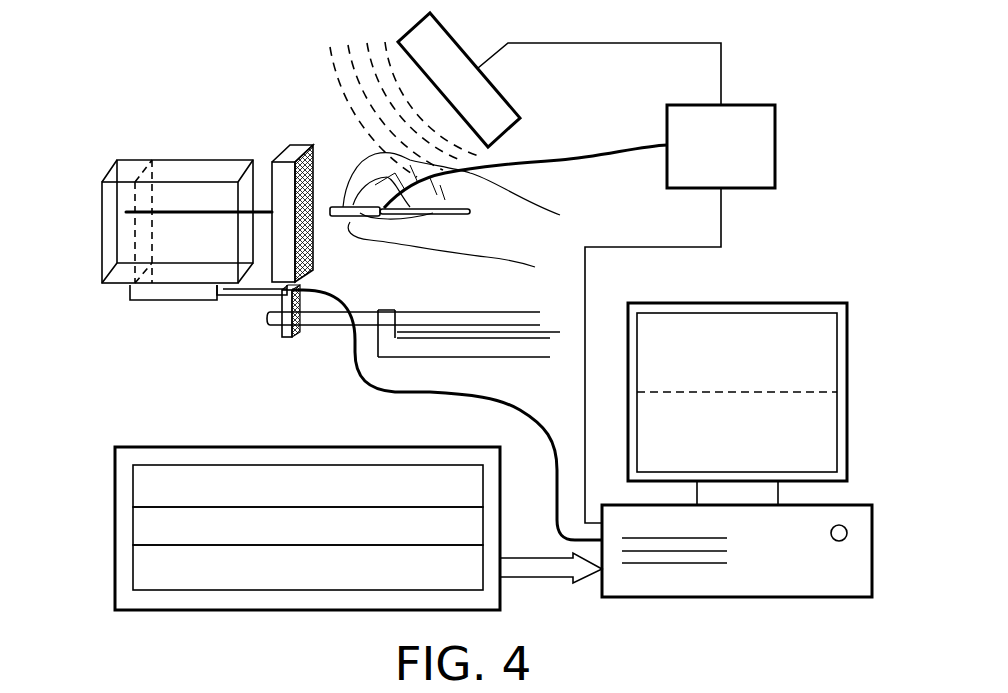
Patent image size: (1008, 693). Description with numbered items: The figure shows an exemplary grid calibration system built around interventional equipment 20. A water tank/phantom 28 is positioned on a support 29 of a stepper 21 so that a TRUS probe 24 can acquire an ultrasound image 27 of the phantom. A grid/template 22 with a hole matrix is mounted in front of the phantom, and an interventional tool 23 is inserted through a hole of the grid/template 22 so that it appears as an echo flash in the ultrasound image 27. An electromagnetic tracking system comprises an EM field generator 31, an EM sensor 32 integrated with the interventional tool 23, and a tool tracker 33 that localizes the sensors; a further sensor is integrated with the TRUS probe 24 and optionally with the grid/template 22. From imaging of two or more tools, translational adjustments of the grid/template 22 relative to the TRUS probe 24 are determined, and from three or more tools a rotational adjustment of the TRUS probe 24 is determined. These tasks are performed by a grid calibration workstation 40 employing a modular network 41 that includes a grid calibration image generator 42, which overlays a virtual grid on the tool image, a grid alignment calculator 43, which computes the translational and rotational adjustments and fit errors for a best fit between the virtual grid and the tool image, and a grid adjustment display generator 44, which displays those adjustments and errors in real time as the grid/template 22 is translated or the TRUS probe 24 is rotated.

The interventional equipment 20 is at (326, 388).
The stepper 21 is at (463, 348).
The grid/template 22 is at (282, 263).
The interventional tool 23 is at (337, 217).
The TRUS probe 24 is at (140, 292).
The ultrasound image 27 is at (145, 168).
The water tank/phantom 28 is at (180, 158).
The support 29 is at (223, 294).
The EM field generator 31 is at (503, 100).
The EM sensor 32 is at (198, 208).
The tool tracker 33 is at (775, 140).
The grid calibration workstation 40 is at (797, 303).
The modular network 41 is at (115, 463).
The grid calibration image generator 42 is at (133, 487).
The grid alignment calculator 43 is at (133, 528).
The grid adjustment display generator 44 is at (133, 567).